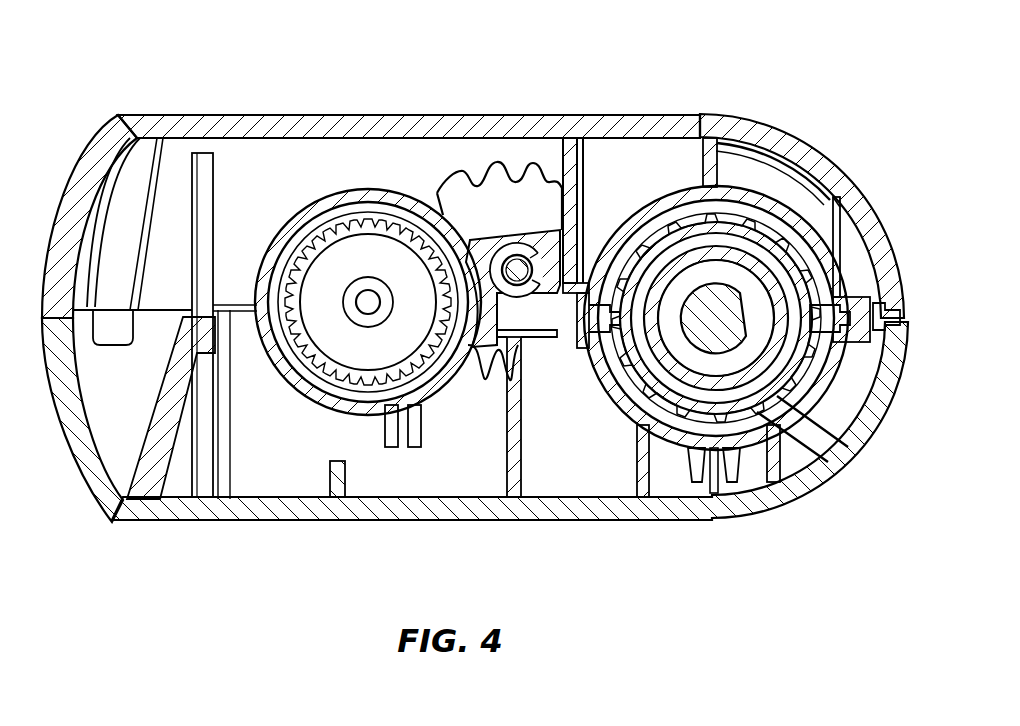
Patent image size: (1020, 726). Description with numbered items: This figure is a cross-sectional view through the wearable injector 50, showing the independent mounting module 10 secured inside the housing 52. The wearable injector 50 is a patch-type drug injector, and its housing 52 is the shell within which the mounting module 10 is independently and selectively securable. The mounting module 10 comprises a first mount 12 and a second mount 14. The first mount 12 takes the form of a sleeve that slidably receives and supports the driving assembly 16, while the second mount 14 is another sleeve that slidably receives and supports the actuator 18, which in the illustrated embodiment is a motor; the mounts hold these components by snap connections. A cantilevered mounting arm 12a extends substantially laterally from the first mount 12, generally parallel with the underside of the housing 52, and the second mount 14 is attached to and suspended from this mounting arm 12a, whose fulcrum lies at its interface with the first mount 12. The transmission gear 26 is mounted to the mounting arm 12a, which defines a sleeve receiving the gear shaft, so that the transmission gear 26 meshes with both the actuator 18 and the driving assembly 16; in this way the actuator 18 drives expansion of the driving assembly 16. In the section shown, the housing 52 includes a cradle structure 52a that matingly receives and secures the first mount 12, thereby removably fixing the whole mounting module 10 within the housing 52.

The independent mounting module 10 is at (588, 254).
The first mount 12 is at (780, 185).
The cantilevered mounting arm 12a is at (555, 247).
The second mount 14 is at (345, 188).
The driving assembly 16 is at (780, 400).
The actuator 18 is at (345, 330).
The transmission gear 26 is at (470, 162).
The wearable injector 50 is at (177, 113).
The housing 52 is at (438, 520).
The cradle structure 52a is at (582, 460).